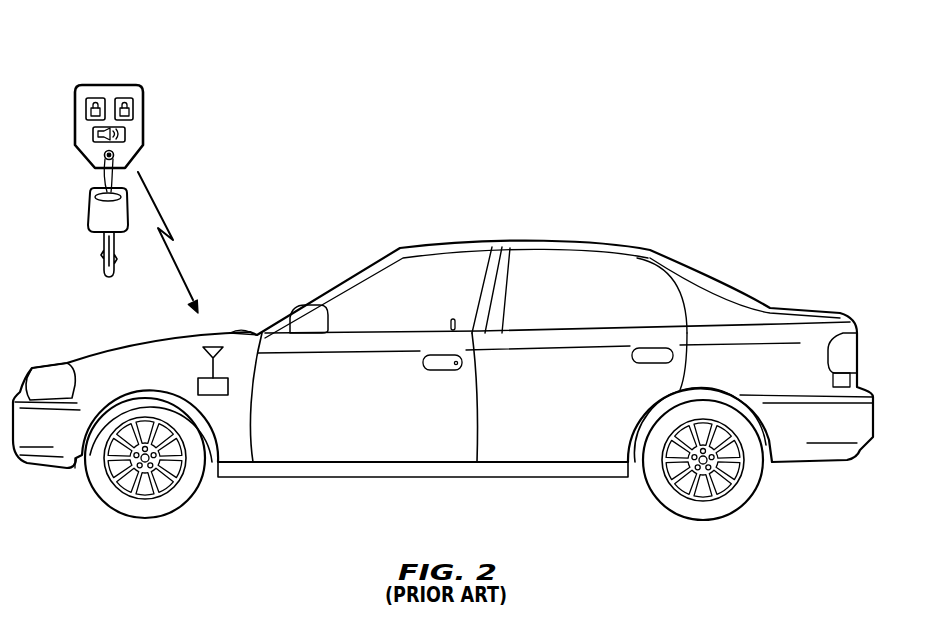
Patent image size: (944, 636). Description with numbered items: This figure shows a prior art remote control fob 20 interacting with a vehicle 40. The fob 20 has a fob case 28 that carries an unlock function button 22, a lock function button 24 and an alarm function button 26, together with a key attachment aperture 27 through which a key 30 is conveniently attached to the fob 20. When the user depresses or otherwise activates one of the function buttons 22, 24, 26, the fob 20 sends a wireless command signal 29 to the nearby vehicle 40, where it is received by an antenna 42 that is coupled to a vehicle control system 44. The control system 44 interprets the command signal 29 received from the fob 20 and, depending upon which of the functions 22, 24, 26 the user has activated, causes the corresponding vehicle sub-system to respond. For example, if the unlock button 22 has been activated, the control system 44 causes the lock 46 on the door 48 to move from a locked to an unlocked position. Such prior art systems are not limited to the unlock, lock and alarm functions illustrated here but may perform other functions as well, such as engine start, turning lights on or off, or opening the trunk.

The fob 20 is at (127, 170).
The unlock function button 22 is at (133, 108).
The lock function button 24 is at (86, 112).
The alarm function button 26 is at (125, 134).
The key attachment aperture 27 is at (105, 157).
The fob case 28 is at (97, 85).
The wireless command signal 29 is at (173, 232).
The key 30 is at (88, 219).
The vehicle 40 is at (443, 361).
The antenna 42 is at (218, 346).
The vehicle control system 44 is at (217, 396).
The lock 46 is at (452, 320).
The door 48 is at (381, 420).